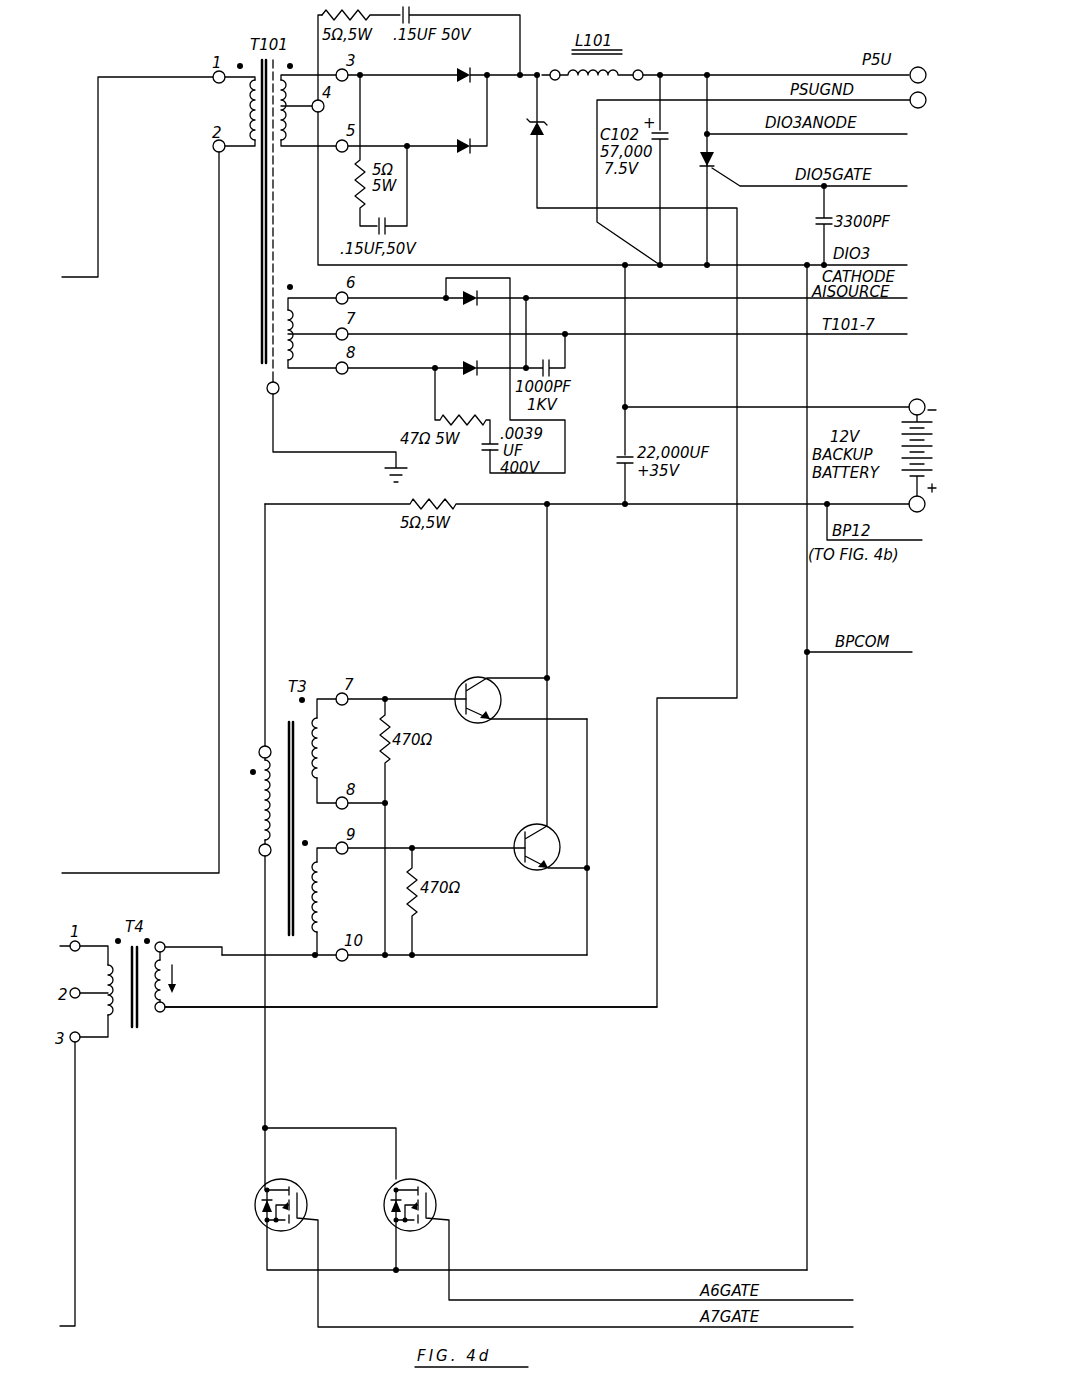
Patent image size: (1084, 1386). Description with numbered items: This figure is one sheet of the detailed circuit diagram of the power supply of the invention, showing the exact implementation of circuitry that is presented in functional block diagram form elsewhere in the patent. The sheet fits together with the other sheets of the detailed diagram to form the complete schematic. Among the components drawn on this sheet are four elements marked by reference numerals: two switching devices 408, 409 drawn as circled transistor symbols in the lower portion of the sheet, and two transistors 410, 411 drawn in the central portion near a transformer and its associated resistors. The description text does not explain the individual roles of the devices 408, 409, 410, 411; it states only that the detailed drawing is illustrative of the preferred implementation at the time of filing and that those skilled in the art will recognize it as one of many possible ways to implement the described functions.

The MOSFET switching transistor 408 is at (282, 1180).
The MOSFET switching transistor 409 is at (422, 1180).
The transistor 410 is at (472, 676).
The transistor 411 is at (531, 826).